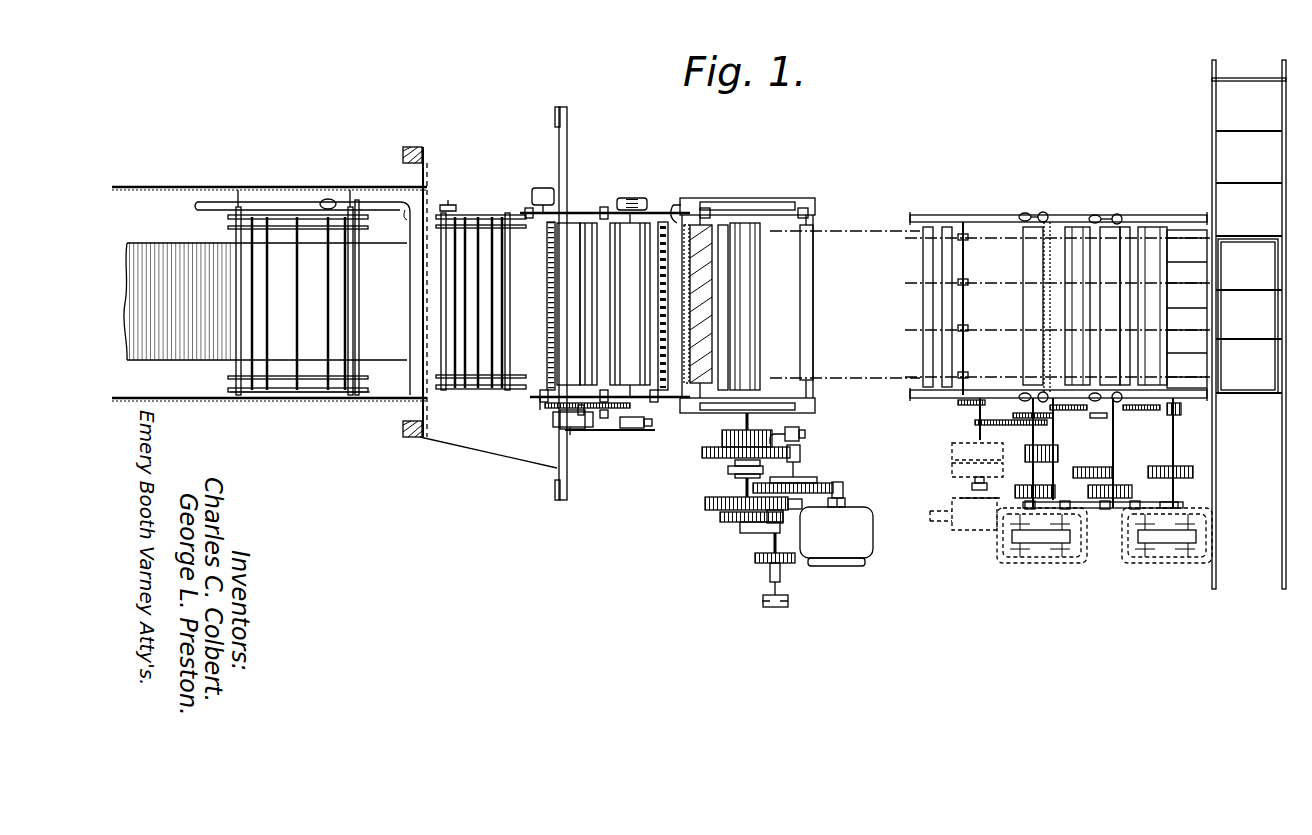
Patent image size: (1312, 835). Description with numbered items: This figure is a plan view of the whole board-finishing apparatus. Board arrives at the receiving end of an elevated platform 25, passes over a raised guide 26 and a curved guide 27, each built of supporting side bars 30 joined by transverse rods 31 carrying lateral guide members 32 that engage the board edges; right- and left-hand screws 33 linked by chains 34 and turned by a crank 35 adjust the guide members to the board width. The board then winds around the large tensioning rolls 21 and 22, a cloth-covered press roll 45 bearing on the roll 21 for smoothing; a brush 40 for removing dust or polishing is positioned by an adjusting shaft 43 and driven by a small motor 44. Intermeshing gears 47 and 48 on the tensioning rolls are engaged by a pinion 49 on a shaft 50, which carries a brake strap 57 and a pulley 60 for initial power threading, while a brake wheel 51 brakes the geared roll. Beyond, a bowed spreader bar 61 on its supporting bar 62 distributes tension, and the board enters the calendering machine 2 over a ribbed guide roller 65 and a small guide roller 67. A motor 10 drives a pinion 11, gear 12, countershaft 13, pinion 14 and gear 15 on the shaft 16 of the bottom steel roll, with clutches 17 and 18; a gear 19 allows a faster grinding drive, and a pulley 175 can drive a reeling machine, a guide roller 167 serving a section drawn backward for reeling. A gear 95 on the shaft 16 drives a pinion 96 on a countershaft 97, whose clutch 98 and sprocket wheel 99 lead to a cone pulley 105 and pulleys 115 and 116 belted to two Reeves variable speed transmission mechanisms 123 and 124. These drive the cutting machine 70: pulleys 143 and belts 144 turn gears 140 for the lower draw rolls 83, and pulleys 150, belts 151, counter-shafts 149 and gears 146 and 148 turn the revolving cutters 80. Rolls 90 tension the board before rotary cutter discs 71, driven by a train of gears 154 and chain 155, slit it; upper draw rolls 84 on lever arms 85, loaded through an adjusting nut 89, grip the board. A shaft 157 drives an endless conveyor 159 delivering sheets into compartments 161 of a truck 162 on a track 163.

The calendering machine 2 is at (747, 290).
The motor 10 is at (836, 532).
The pinion 11 is at (845, 487).
The gear 12 is at (820, 483).
The countershaft 13 is at (787, 427).
The pinion 14 is at (800, 452).
The gear 15 is at (702, 452).
The shaft 16 is at (745, 420).
The clutch 17 is at (805, 477).
The clutch 18 is at (730, 462).
The gear 19 is at (705, 500).
The tensioning roll 21 is at (568, 304).
The tensioning roll 22 is at (630, 305).
The elevated platform 25 is at (176, 352).
The raised guide 26 is at (311, 400).
The curved guide 27 is at (458, 406).
The supporting side bars 30 is at (278, 217).
The transverse rods 31 is at (328, 290).
The lateral guide members 32 is at (283, 230).
The screws 33 is at (345, 273).
The chains 34 is at (291, 215).
The crank 35 is at (336, 200).
The chain 40 is at (553, 325).
The adjusting shaft 43 is at (540, 408).
The motor 44 is at (540, 188).
The press roll 45 is at (588, 268).
The gear 47 is at (590, 412).
The gear 48 is at (560, 406).
The pinion 49 is at (604, 420).
The shaft 50 is at (640, 418).
The brake wheel 51 is at (566, 420).
The strap 57 is at (630, 198).
The pulley 60 is at (628, 431).
The spreader bar 61 is at (663, 222).
The supporting bar 62 is at (676, 210).
The guide roller 65 is at (705, 277).
The small guide roller 67 is at (726, 328).
The cutting machine 70 is at (1058, 274).
The rotary cutter discs 71 is at (967, 278).
The revolving cutters 80 is at (1088, 227).
The lower draw rolls 83 is at (1030, 303).
The upper draw rolls 84 is at (1075, 227).
The lever arms 85 is at (1025, 213).
The adjusting nut 89 is at (1043, 212).
The rolls 90 is at (950, 275).
The gear 95 is at (720, 516).
The pinion 96 is at (784, 519).
The countershaft 97 is at (773, 541).
The clutch 98 is at (768, 570).
The sprocket wheel 99 is at (755, 558).
The cone pulley 105 is at (955, 530).
The pulley 115 is at (952, 470).
The pulley 116 is at (952, 452).
The Reeves variable speed transmission mechanism 123 is at (1042, 548).
The Reeves variable speed transmission mechanism 124 is at (1167, 548).
The gears 140 is at (1036, 420).
The pulleys 143 is at (972, 487).
The belts 144 is at (1100, 508).
The gears 146 is at (1020, 413).
The gears 148 is at (1178, 415).
The counter-shafts 149 is at (1224, 441).
The pulleys 150 is at (1090, 470).
The belts 151 is at (1190, 470).
The train of gears 154 is at (965, 406).
The chain 155 is at (975, 423).
The shaft 157 is at (1052, 484).
The endless conveyor 159 is at (1200, 282).
The compartments 161 is at (1225, 174).
The truck 162 is at (1206, 104).
The track 163 is at (1282, 505).
The guide roller 167 is at (814, 305).
The pulley 175 is at (722, 436).